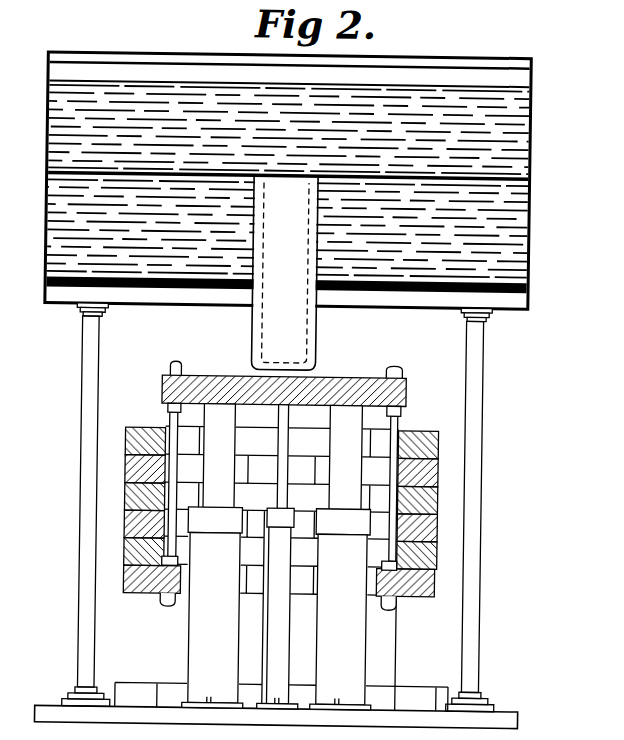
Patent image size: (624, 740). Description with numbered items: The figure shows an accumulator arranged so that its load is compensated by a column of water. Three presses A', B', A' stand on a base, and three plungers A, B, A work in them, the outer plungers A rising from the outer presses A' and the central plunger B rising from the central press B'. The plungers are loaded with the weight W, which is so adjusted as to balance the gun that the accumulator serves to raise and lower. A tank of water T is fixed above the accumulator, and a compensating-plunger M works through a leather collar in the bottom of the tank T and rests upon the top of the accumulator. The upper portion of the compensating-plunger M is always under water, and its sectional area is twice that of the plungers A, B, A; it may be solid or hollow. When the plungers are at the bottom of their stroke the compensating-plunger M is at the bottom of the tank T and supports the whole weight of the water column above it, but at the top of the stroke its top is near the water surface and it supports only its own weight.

The tank of water T is at (288, 180).
The compensating-plunger M is at (284, 273).
The weight W is at (281, 486).
The plunger A is at (282, 457).
The plunger B is at (281, 457).
The press A' is at (278, 608).
The press B' is at (279, 608).